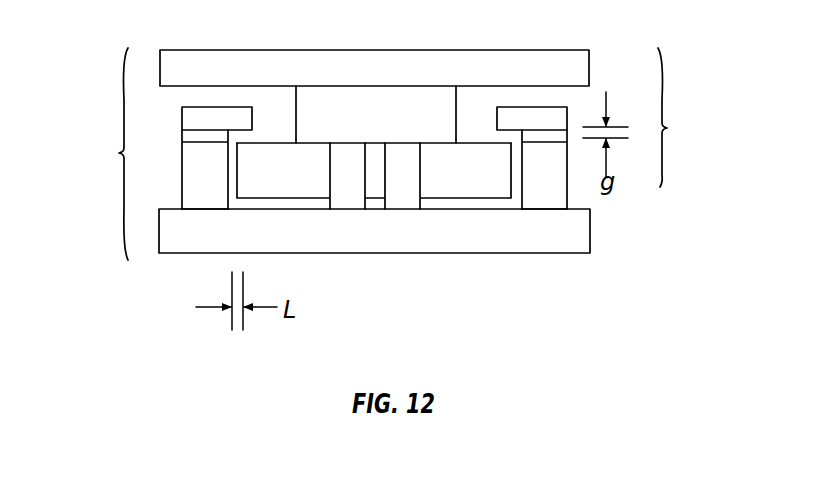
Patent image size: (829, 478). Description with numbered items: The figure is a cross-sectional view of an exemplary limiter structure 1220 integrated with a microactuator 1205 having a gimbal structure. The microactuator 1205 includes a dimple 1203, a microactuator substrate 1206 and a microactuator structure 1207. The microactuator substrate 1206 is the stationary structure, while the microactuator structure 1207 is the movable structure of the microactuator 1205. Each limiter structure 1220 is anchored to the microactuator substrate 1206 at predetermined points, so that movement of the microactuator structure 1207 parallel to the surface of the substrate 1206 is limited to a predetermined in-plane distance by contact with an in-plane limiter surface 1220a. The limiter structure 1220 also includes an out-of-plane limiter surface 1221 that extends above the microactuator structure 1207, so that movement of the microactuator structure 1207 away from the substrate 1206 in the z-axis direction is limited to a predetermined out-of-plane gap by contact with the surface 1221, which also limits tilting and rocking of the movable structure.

The dimple 1203 is at (376, 205).
The microactuator 1205 is at (119, 153).
The microactuator substrate 1206 is at (578, 233).
The microactuator structure 1207 is at (667, 128).
The limiter structure 1220 is at (206, 173).
The in-plane limiter surface 1220a is at (229, 202).
The out-of-plane limiter surface 1221 is at (214, 113).